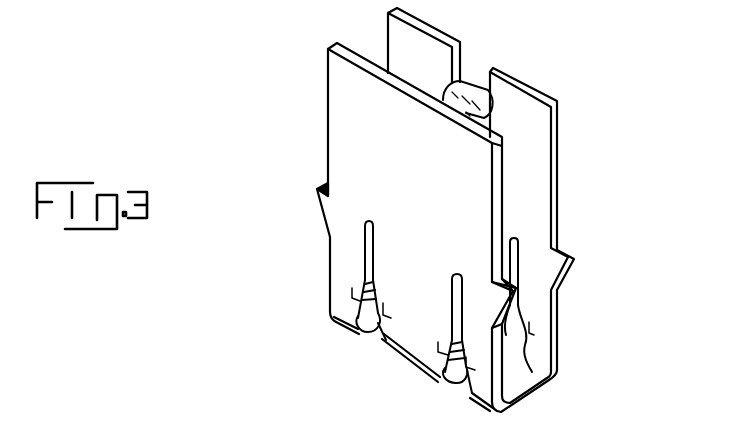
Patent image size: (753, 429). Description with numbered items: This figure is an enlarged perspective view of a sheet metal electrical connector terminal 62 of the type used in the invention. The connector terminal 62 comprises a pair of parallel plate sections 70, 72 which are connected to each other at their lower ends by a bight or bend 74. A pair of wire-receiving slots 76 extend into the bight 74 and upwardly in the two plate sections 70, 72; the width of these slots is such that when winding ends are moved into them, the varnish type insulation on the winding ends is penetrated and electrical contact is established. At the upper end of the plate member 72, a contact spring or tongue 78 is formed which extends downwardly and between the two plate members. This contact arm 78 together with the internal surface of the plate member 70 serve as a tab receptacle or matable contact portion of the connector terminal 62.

The connector terminal 62 is at (557, 90).
The plate section 70 is at (328, 145).
The plate section 72 is at (558, 169).
The bight 74 is at (536, 400).
The wire-receiving slots 76 is at (450, 276).
The contact spring 78 is at (472, 83).